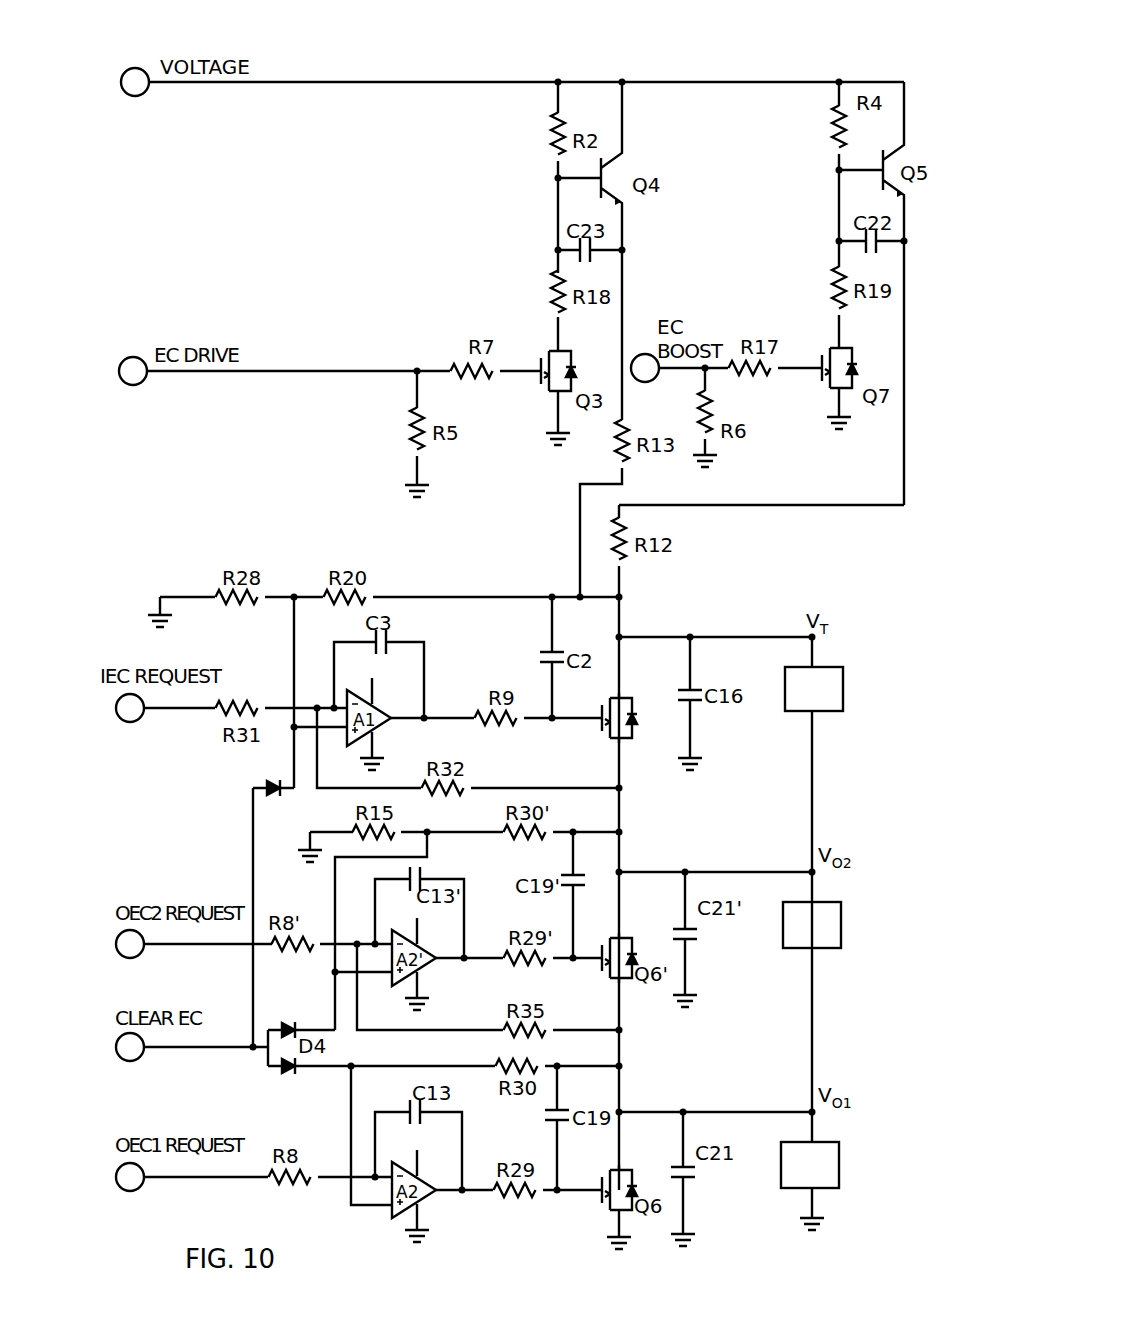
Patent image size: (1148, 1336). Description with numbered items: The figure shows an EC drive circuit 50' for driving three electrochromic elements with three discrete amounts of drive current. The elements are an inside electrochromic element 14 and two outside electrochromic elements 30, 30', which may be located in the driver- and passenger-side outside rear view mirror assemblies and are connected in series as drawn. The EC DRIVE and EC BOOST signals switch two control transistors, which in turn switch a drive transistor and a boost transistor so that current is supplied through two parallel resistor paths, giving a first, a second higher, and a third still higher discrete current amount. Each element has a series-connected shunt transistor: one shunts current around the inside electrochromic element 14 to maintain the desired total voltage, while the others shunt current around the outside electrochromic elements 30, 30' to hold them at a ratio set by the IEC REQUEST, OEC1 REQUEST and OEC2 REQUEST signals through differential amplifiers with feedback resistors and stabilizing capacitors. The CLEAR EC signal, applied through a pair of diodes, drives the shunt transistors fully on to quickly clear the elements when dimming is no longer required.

The inside electrochromic element 14 is at (830, 667).
The outside electrochromic element 30 is at (830, 1170).
The second outside electrochromic element 30' is at (834, 909).
The EC drive circuit 50' is at (520, 631).